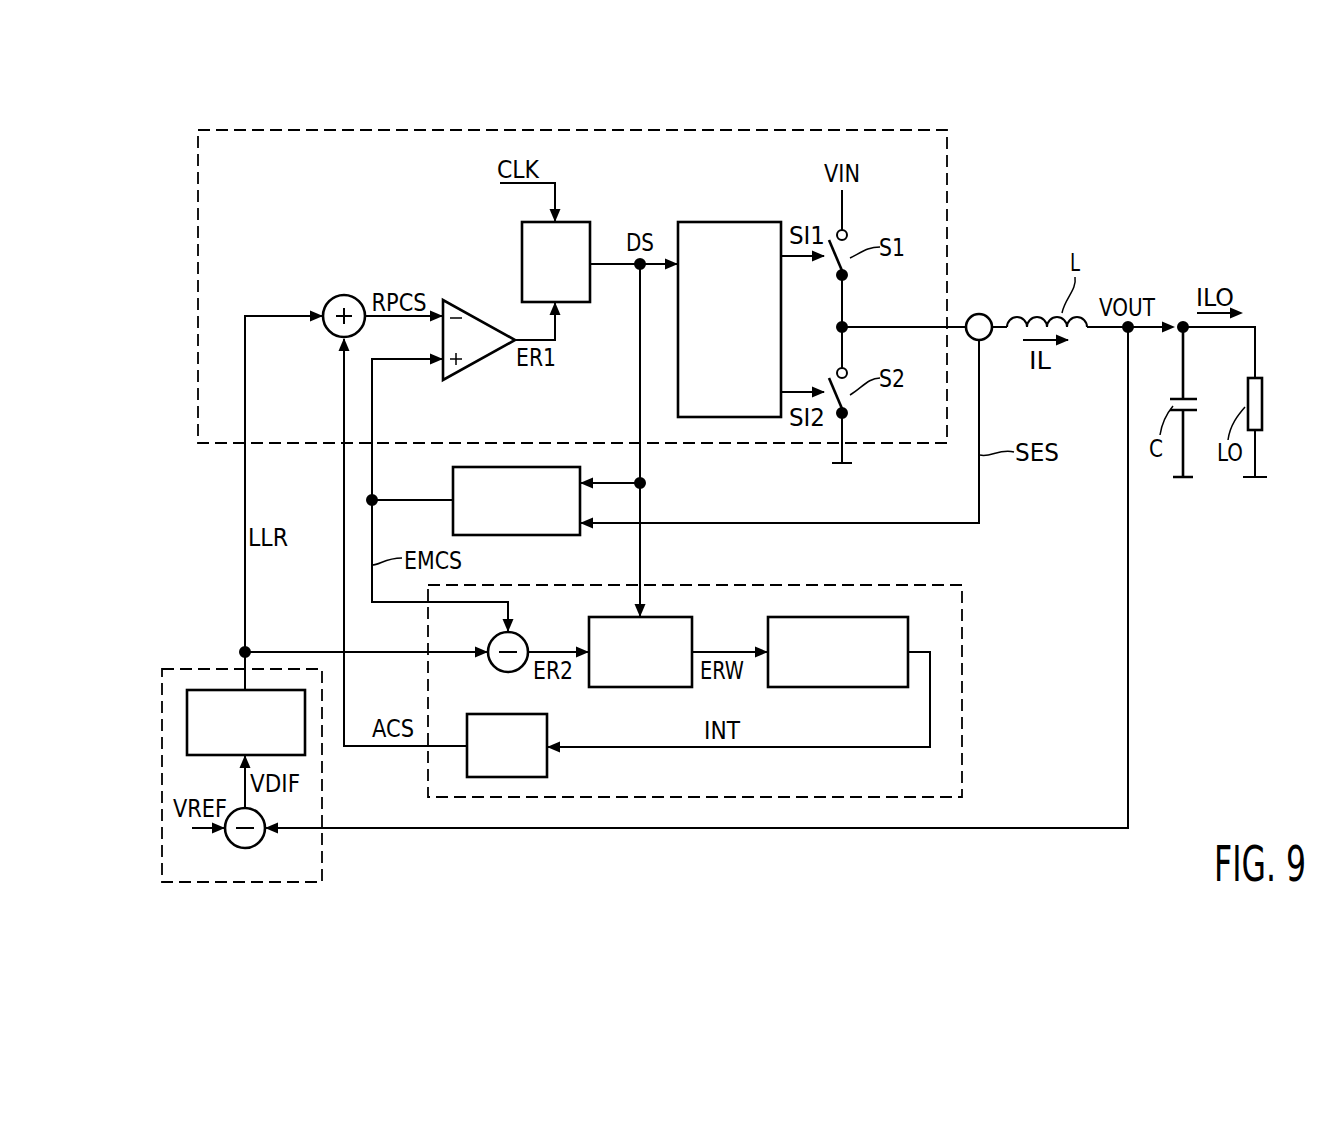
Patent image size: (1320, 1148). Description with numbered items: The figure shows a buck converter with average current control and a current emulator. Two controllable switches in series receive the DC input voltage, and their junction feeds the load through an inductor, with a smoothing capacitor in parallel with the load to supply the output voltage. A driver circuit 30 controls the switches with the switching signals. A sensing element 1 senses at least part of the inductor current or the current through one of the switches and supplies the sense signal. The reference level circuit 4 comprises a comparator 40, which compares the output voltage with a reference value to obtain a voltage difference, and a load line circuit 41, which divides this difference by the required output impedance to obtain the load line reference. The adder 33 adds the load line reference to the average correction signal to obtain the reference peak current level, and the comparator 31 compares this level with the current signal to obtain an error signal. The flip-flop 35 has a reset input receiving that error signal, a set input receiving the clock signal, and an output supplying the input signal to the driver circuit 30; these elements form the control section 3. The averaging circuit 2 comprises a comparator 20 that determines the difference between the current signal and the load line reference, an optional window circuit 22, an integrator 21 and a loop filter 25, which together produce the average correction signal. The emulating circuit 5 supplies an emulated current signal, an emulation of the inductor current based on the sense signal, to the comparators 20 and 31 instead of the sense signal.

The sensing element 1 is at (982, 313).
The averaging circuit 2 is at (965, 683).
The switch mode power supply controller 3 is at (195, 266).
The reference level circuit 4 is at (193, 666).
The emulating circuit 5 is at (453, 483).
The comparator 20 is at (525, 637).
The integrator 21 is at (835, 688).
The window circuit 22 is at (640, 688).
The loop filter 25 is at (547, 770).
The driver circuit 30 is at (725, 222).
The comparator 31 is at (472, 302).
The adder 33 is at (344, 295).
The flip-flop 35 is at (580, 222).
The comparator 40 is at (225, 843).
The load line circuit 41 is at (187, 715).